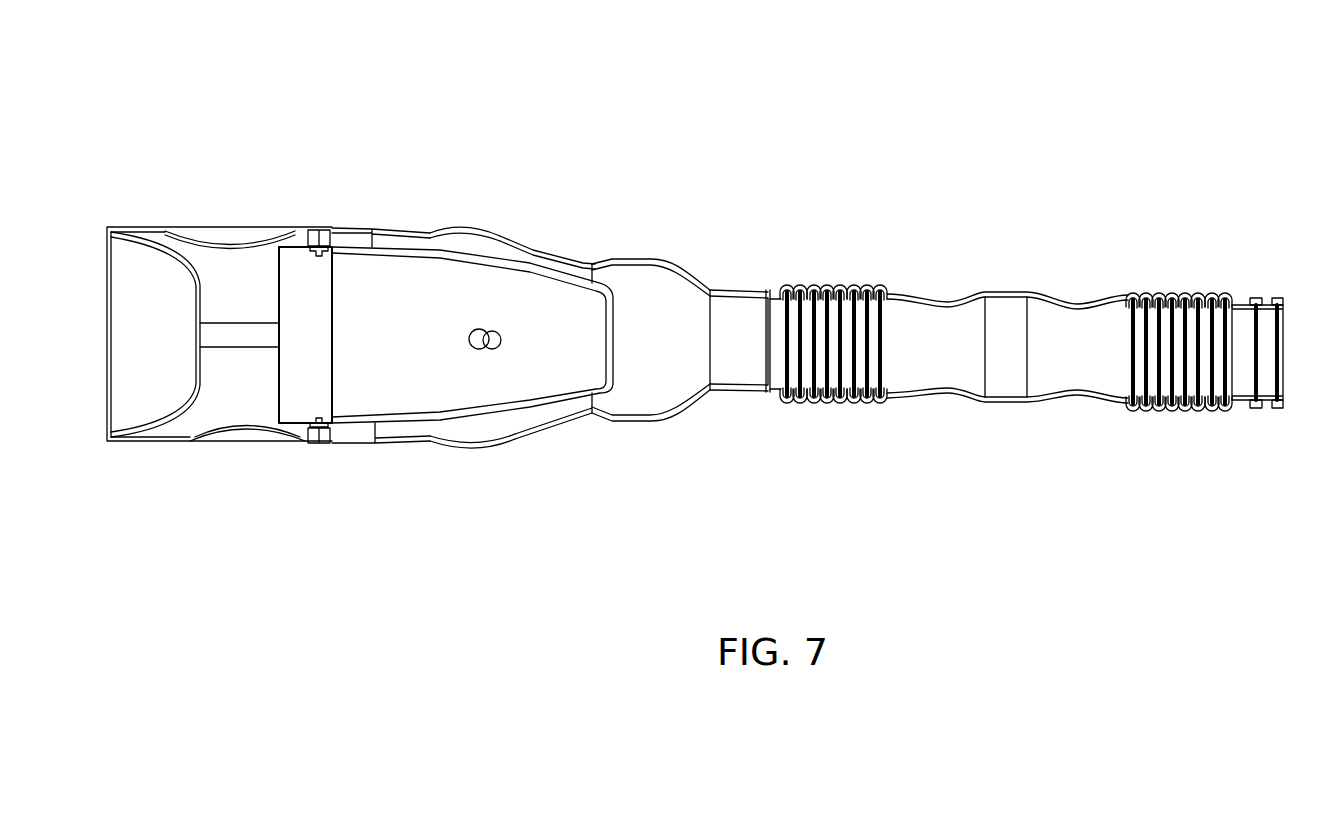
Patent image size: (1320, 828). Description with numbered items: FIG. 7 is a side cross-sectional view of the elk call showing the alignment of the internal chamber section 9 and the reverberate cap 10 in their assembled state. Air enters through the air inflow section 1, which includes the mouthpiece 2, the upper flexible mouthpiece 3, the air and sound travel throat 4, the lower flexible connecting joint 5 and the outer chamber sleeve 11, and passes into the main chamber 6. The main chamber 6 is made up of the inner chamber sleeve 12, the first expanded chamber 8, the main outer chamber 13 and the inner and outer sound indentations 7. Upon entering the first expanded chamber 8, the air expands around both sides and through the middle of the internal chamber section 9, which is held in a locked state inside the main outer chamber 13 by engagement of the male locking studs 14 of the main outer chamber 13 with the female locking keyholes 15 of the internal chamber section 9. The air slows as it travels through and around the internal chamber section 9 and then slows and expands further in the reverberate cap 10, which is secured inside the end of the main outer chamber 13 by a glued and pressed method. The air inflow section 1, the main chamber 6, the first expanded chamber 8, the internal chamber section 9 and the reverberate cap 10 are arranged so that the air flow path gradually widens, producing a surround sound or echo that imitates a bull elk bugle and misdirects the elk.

The air inflow section 1 is at (965, 178).
The mouthpiece 2 is at (1232, 328).
The upper flexible mouthpiece 3 is at (1138, 313).
The air and sound travel throat 4 is at (1002, 315).
The lower flexible connecting joint 5 is at (832, 313).
The main chamber 6 is at (430, 514).
The inner and outer sound indentations 7 is at (240, 240).
The first expanded chamber 8 is at (627, 280).
The internal chamber section 9 is at (370, 305).
The reverberate cap 10 is at (163, 237).
The outer chamber sleeve 11 is at (740, 395).
The inner chamber sleeve 12 is at (720, 317).
The main outer chamber 13 is at (393, 447).
The male locking studs 14 is at (318, 418).
The female locking keyholes 15 is at (507, 337).